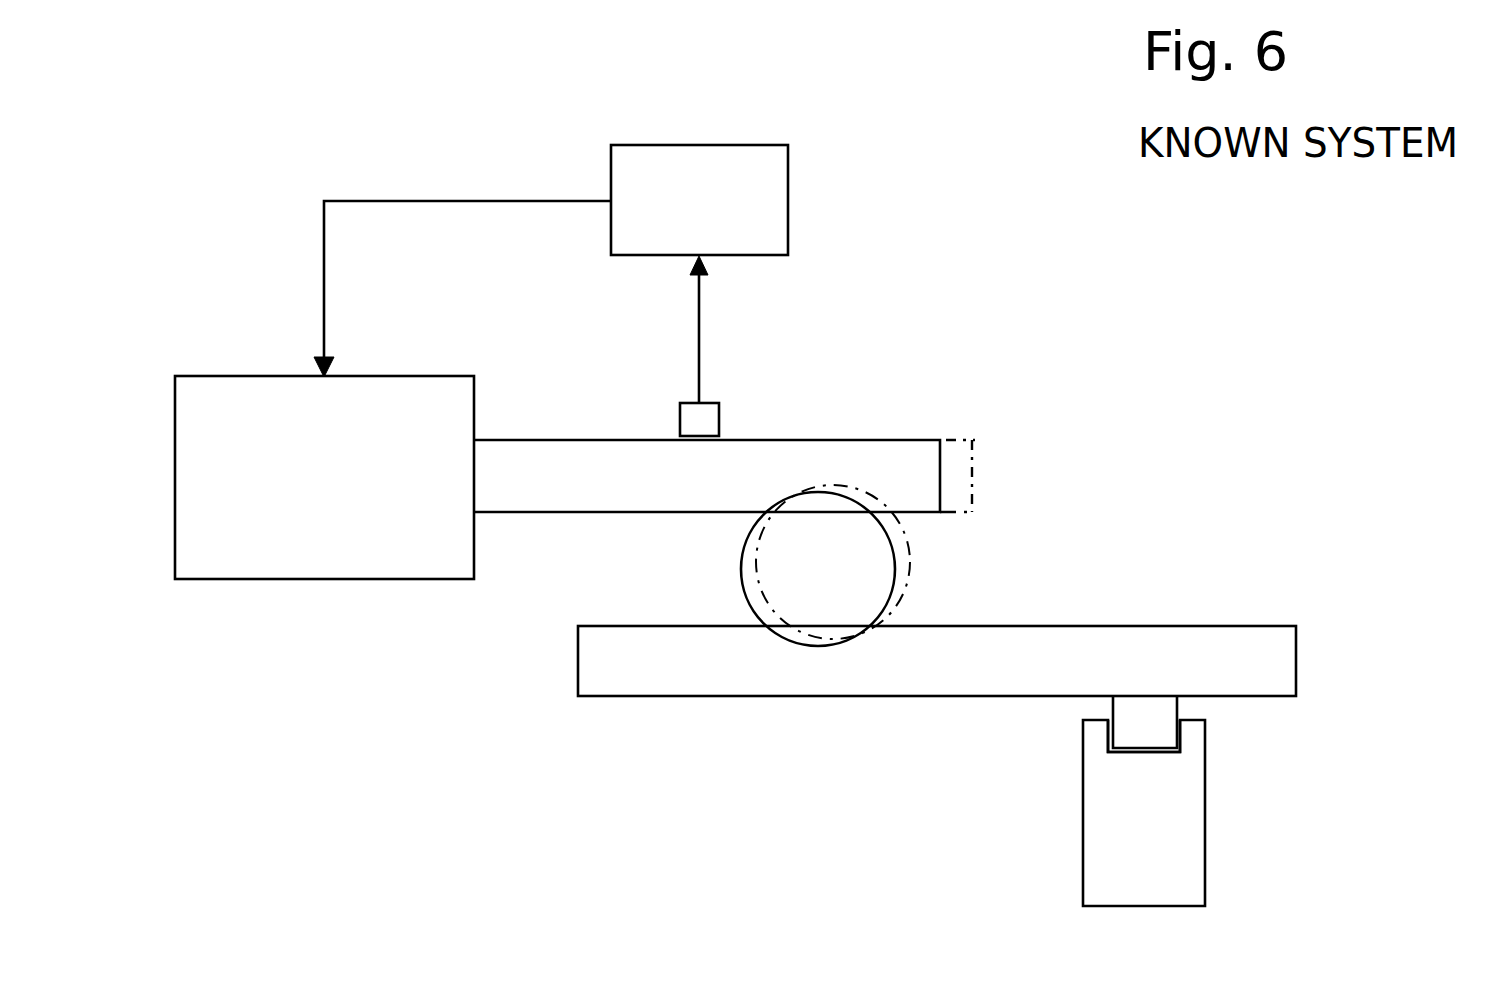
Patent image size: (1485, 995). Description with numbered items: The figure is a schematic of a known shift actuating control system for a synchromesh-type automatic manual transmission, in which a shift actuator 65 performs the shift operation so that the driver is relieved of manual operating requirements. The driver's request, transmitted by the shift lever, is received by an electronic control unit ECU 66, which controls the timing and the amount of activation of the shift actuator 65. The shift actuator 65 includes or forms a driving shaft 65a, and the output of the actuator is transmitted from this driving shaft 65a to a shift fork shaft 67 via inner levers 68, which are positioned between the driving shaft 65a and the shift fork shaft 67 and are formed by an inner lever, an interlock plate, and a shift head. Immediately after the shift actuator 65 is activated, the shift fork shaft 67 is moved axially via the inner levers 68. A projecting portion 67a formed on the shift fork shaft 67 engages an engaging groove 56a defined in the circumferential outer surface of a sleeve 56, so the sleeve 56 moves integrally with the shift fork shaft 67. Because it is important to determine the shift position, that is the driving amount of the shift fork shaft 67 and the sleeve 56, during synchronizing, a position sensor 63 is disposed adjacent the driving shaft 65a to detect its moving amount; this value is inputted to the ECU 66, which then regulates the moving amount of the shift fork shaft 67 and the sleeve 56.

The sleeve 56 is at (1180, 858).
The engaging groove 56a is at (1153, 733).
The position sensor 63 is at (690, 410).
The shift actuator 65 is at (356, 496).
The driving shaft 65a is at (772, 455).
The electronic control unit 66 is at (728, 221).
The shift fork shaft 67 is at (1012, 645).
The projecting portion 67a is at (1132, 725).
The inner levers 68 is at (850, 588).